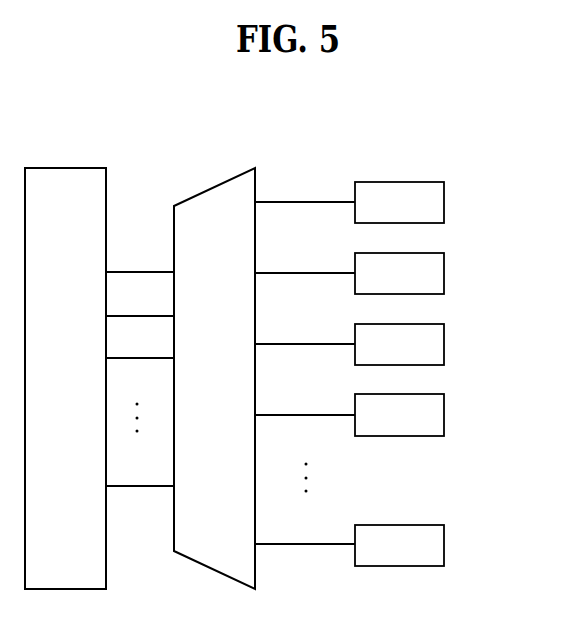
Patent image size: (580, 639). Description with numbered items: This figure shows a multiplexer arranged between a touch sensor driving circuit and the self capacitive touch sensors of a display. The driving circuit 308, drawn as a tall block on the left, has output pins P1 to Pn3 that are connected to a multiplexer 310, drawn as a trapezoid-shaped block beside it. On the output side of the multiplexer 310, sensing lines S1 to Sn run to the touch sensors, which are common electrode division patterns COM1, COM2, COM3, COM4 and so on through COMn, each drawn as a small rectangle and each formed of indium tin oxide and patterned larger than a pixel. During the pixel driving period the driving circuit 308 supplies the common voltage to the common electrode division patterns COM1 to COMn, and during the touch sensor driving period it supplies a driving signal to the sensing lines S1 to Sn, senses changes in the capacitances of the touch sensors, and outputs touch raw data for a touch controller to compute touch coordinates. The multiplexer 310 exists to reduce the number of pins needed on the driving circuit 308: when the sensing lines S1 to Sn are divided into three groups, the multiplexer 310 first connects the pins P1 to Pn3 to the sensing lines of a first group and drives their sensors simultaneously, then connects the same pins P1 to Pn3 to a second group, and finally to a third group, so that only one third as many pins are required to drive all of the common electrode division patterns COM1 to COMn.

The driving circuit 308 is at (82, 384).
The multiplexer 310 is at (230, 384).
The pin P1 is at (138, 272).
The pin Pn3 is at (140, 487).
The sensing line S1 is at (302, 201).
The sensing line Sn is at (305, 546).
The common electrode division pattern COM1 is at (444, 201).
The common electrode division pattern COM2 is at (444, 272).
The common electrode division pattern COM3 is at (444, 343).
The common electrode division pattern COM4 is at (444, 414).
The common electrode division pattern COMn is at (444, 543).